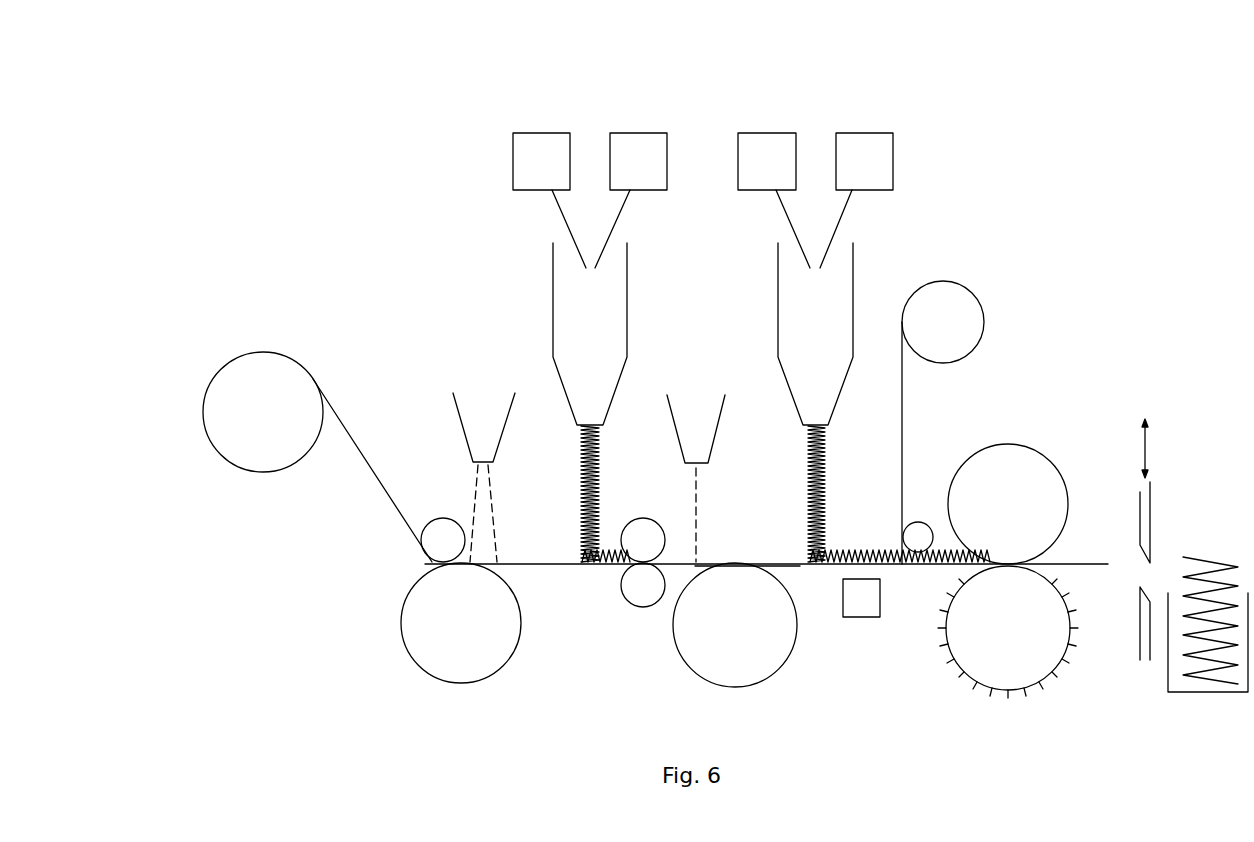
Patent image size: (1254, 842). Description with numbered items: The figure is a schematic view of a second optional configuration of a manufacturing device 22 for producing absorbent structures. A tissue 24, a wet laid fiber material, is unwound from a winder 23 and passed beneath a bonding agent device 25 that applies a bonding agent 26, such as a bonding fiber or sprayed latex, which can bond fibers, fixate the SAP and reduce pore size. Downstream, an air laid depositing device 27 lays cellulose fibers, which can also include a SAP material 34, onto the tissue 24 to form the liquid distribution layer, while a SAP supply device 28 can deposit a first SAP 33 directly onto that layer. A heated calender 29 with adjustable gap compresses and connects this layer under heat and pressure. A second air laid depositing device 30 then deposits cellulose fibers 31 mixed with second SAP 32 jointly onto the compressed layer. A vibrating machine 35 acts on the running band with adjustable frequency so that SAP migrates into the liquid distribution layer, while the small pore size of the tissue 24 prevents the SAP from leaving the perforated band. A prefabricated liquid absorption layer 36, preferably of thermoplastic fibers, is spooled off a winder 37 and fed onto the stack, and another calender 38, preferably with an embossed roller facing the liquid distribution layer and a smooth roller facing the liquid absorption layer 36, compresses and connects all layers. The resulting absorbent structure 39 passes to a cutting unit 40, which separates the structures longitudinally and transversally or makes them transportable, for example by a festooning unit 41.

The manufacturing device 22 is at (1021, 221).
The winder 23 is at (262, 352).
The tissue 24 is at (360, 447).
The bonding agent device 25 is at (485, 390).
The bonding agent 26 is at (497, 532).
The air laid depositing device 27 is at (627, 308).
The SAP supply device 28 is at (717, 435).
The calender 29 is at (643, 606).
The second air laid depositing device 30 is at (853, 247).
The cellulose fibers 31 is at (766, 143).
The second SAP 32 is at (867, 143).
The first SAP 33 is at (540, 143).
The SAP material 34 is at (637, 143).
The vibrating machine 35 is at (862, 612).
The liquid absorption layer 36 is at (902, 410).
The winder 37 is at (984, 318).
The calender 38 is at (1030, 445).
The absorbent structure 39 is at (1090, 565).
The cutting unit 40 is at (1150, 482).
The festooning unit 41 is at (1168, 677).